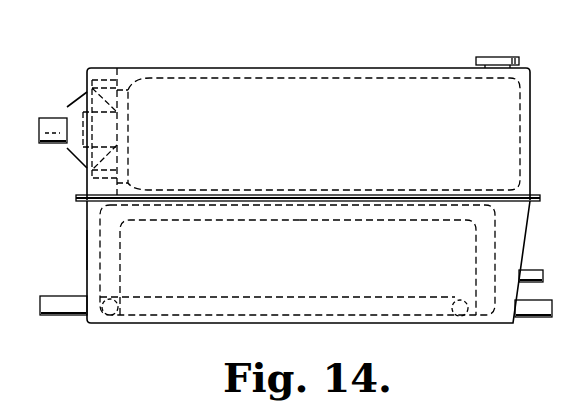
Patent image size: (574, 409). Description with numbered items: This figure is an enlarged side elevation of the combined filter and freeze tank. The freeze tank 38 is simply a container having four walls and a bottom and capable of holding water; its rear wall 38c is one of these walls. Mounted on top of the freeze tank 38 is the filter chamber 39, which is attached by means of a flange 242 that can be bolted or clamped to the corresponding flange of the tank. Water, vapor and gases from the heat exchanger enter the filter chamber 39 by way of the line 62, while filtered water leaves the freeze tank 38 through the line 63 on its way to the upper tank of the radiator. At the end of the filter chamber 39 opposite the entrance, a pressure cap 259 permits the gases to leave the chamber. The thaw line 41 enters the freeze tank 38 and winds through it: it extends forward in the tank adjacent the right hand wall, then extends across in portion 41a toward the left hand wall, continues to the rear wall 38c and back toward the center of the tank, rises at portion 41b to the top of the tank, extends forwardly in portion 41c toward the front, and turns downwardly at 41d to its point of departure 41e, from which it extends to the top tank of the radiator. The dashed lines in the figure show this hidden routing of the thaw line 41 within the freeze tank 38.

The freeze tank 38 is at (518, 228).
The rear wall 38c is at (87, 250).
The filter chamber 39 is at (532, 74).
The thaw line 41 is at (60, 298).
The portion of thaw line 41a is at (462, 300).
The rising portion of thaw line 41b is at (118, 257).
The forward portion of thaw line 41c is at (218, 217).
The downward turn of thaw line 41d is at (476, 247).
The point of departure 41e is at (515, 322).
The line 62 is at (56, 118).
The line 63 is at (532, 272).
The flange 242 is at (533, 200).
The pressure cap 259 is at (490, 57).